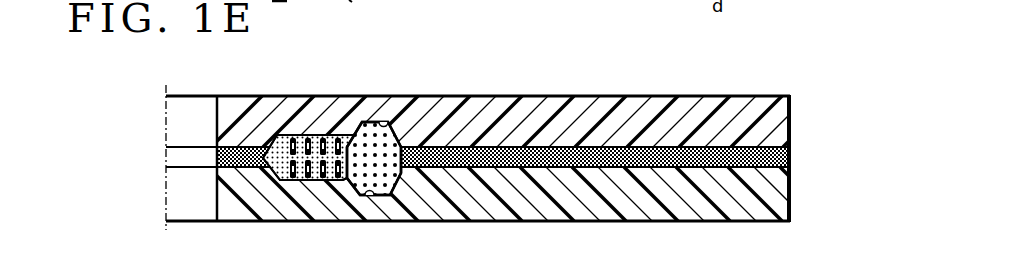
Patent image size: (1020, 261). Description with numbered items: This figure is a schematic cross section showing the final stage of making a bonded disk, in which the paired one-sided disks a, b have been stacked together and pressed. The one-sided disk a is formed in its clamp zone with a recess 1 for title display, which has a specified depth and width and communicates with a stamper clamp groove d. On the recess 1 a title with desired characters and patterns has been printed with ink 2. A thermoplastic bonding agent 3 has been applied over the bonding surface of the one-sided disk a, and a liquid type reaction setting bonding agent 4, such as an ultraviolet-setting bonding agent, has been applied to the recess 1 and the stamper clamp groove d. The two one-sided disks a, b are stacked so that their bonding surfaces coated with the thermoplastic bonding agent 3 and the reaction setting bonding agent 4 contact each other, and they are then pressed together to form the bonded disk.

The recess 1 is at (288, 133).
The ink 2 is at (311, 137).
The thermoplastic bonding agent 3 is at (242, 147).
The reaction setting bonding agent 4 is at (392, 188).
The one-sided disk a is at (722, 221).
The one-sided disk b is at (577, 96).
The stamper clamp groove d is at (386, 126).